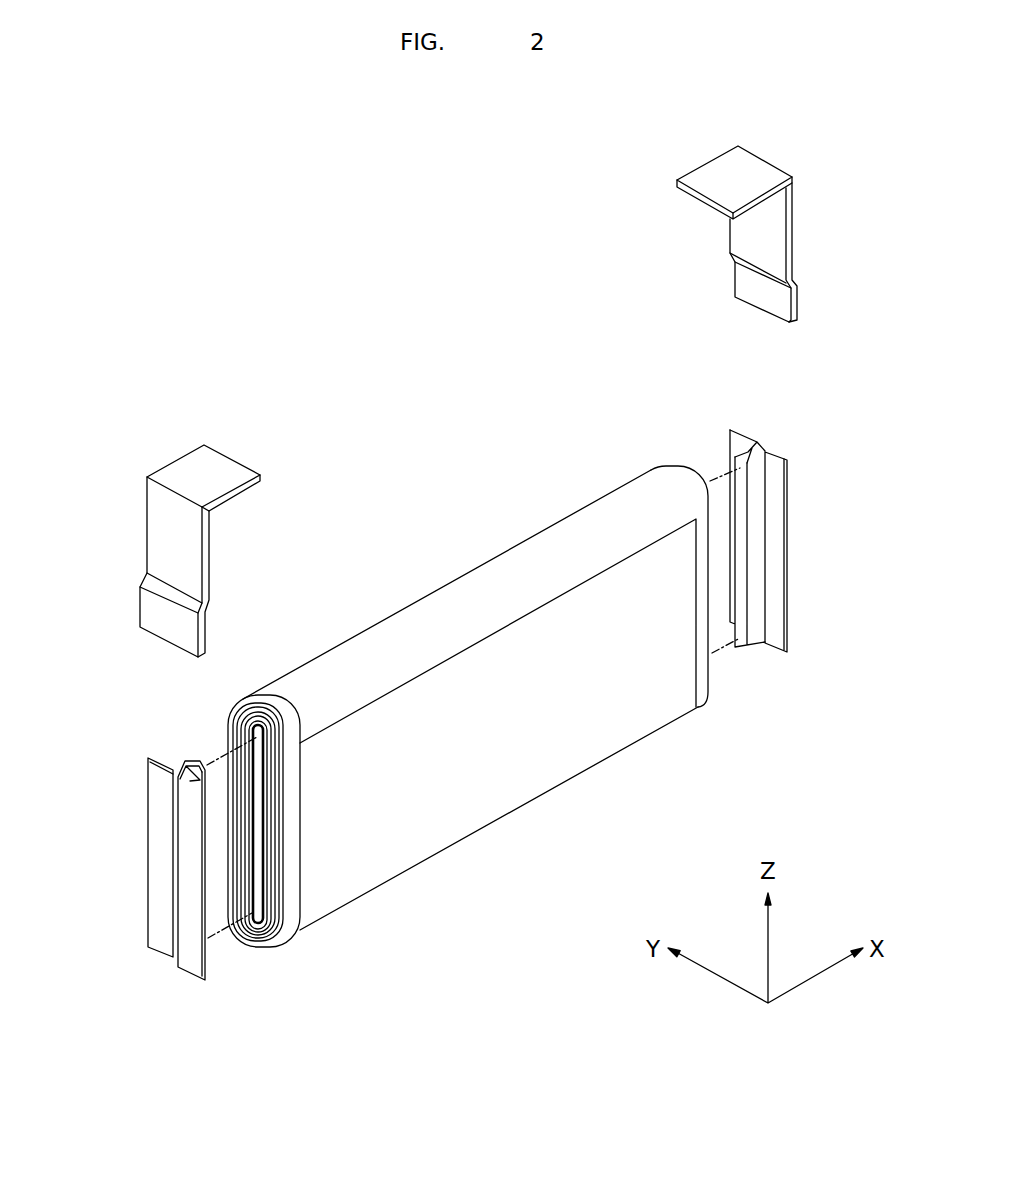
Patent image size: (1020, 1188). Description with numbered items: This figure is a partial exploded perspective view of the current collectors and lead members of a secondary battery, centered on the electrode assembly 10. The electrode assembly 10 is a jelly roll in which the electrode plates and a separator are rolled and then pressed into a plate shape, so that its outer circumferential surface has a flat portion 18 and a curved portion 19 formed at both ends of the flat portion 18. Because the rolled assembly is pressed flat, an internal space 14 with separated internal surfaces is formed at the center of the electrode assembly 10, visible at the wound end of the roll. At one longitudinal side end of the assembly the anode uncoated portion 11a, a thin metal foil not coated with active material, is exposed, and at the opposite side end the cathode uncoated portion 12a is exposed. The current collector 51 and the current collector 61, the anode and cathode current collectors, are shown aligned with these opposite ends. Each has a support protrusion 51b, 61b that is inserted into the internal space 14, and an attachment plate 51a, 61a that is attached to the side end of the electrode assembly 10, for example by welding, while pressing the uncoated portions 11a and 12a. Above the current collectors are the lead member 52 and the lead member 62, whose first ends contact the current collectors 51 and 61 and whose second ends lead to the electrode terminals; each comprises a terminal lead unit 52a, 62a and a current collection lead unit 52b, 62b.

The electrode assembly 10 is at (488, 738).
The anode uncoated portion 11a is at (292, 910).
The cathode uncoated portion 12a is at (708, 700).
The internal space 14 is at (257, 897).
The flat portion 18 is at (466, 793).
The curved portion 19 is at (389, 887).
The current collector 51 is at (143, 836).
The attachment plate 51a is at (155, 885).
The support protrusion 51b is at (196, 760).
The lead member 52 is at (160, 523).
The terminal lead unit 52a is at (190, 465).
The current collection lead unit 52b is at (150, 535).
The current collector 61 is at (785, 523).
The attachment plate 61a is at (780, 610).
The support protrusion 61b is at (738, 440).
The lead member 62 is at (744, 209).
The terminal lead unit 62a is at (715, 175).
The current collection lead unit 62b is at (787, 245).